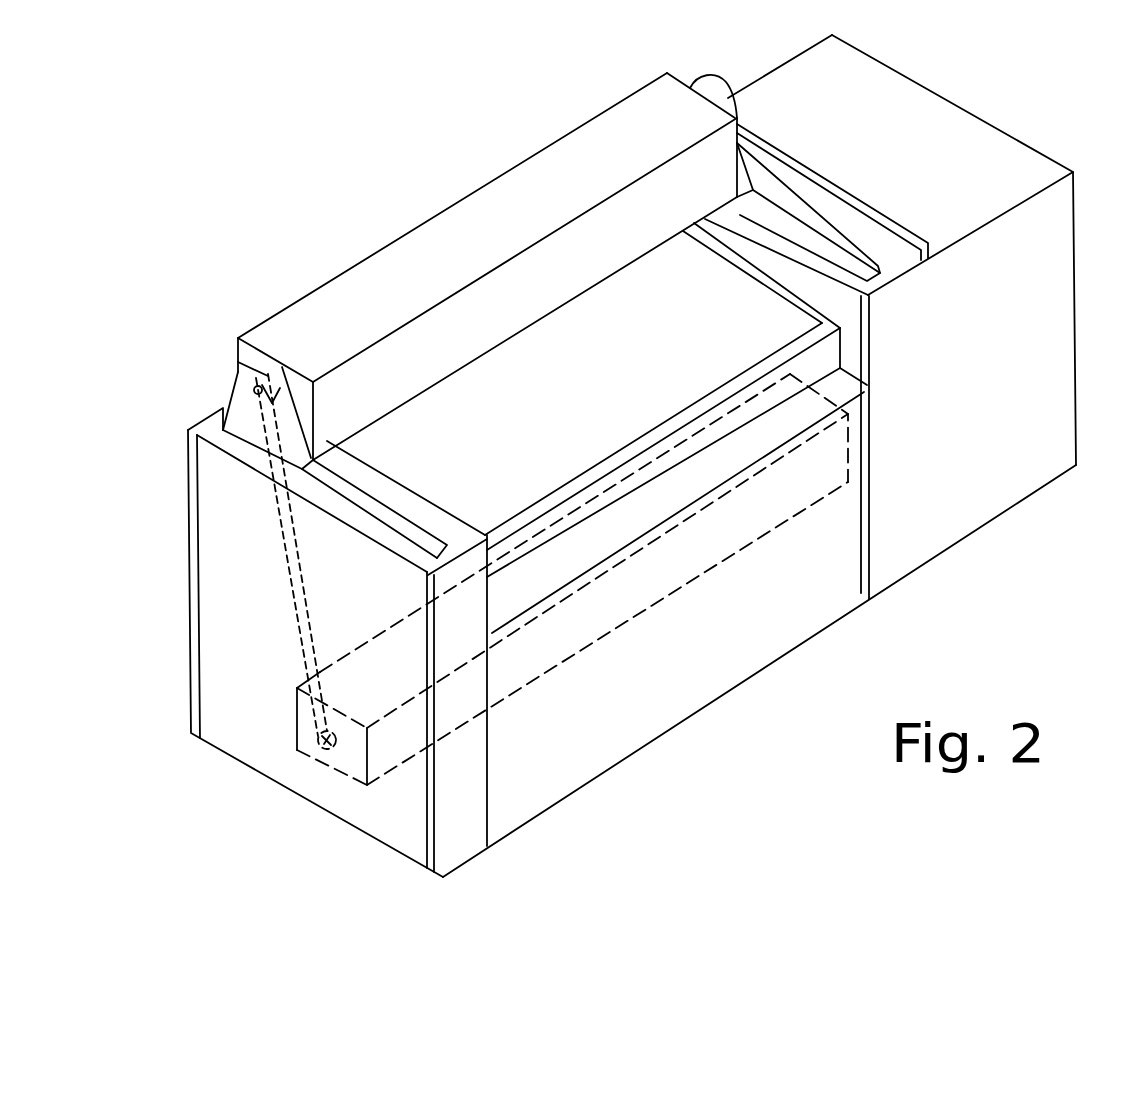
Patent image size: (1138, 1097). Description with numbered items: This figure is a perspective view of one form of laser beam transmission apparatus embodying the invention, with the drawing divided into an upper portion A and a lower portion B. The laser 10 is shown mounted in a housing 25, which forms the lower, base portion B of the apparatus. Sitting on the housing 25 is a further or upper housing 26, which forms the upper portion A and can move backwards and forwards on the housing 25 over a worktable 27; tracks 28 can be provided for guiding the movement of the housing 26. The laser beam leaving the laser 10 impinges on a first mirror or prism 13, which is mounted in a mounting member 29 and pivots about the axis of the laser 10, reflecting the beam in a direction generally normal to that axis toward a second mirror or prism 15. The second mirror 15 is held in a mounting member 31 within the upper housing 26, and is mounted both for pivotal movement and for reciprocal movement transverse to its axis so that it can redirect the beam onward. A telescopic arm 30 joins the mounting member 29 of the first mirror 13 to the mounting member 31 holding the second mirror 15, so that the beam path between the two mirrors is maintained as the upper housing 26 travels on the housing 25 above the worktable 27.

The laser 10 is at (642, 590).
The first mirror or prism 13 is at (313, 746).
The second mirror or prism 15 is at (254, 391).
The housing 25 is at (955, 541).
The upper housing 26 is at (508, 163).
The worktable 27 is at (590, 398).
The tracks 28 is at (378, 508).
The mounting member 29 is at (295, 732).
The telescopic arm 30 is at (290, 607).
The mounting member 31 is at (237, 370).
The upper cover unit A is at (278, 250).
The lower base unit B is at (170, 651).